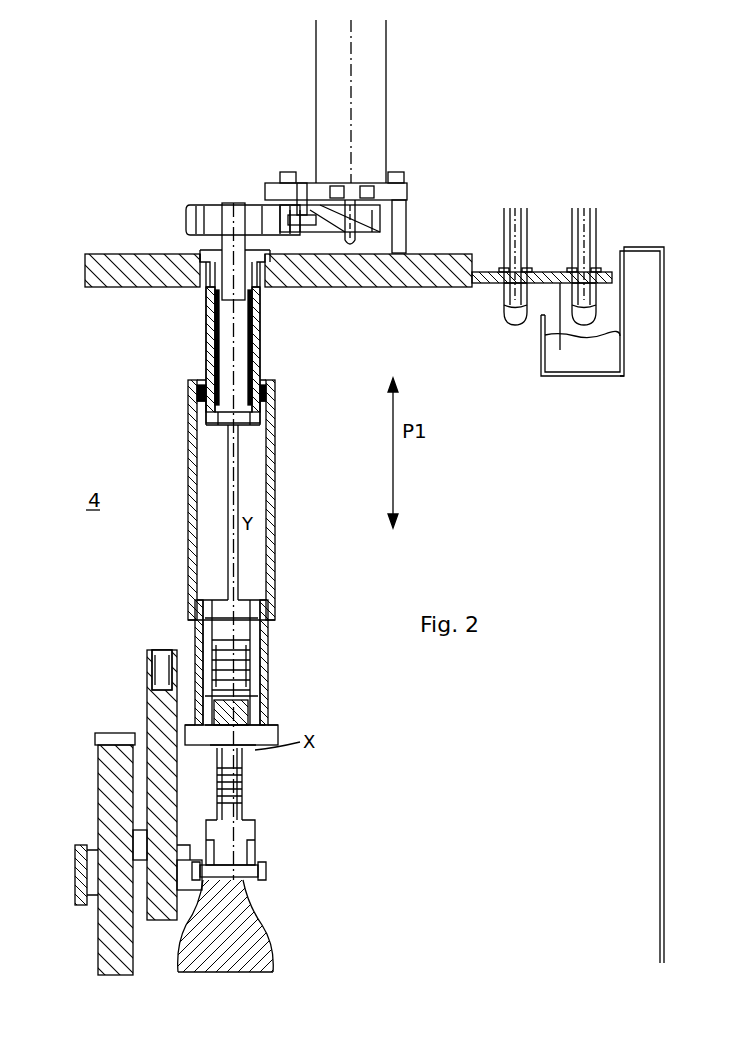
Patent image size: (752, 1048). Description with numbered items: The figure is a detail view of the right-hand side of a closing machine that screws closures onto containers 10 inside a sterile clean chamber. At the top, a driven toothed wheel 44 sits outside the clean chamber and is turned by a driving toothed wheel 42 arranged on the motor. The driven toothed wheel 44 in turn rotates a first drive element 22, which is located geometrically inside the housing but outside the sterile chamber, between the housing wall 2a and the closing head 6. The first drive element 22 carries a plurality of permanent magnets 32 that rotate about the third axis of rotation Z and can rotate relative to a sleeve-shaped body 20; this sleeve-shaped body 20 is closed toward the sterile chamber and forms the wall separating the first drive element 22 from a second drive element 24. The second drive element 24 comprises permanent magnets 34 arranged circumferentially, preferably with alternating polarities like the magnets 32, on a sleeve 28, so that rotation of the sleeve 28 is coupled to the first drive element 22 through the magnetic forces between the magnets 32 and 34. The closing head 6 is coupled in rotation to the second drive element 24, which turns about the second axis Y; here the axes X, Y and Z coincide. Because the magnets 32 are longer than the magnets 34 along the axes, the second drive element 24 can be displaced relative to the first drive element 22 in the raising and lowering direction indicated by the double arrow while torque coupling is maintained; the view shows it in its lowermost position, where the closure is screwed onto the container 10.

The housing wall 2a is at (140, 270).
The closing head 6 is at (256, 845).
The container 10 is at (258, 912).
The sleeve-shaped body 20 is at (212, 356).
The first drive element 22 is at (272, 345).
The second drive element 24 is at (184, 400).
The sleeve 28 is at (275, 455).
The permanent magnets 32 is at (206, 322).
The permanent magnets 34 is at (265, 397).
The driving toothed wheel 42 is at (322, 228).
The driven toothed wheel 44 is at (200, 220).